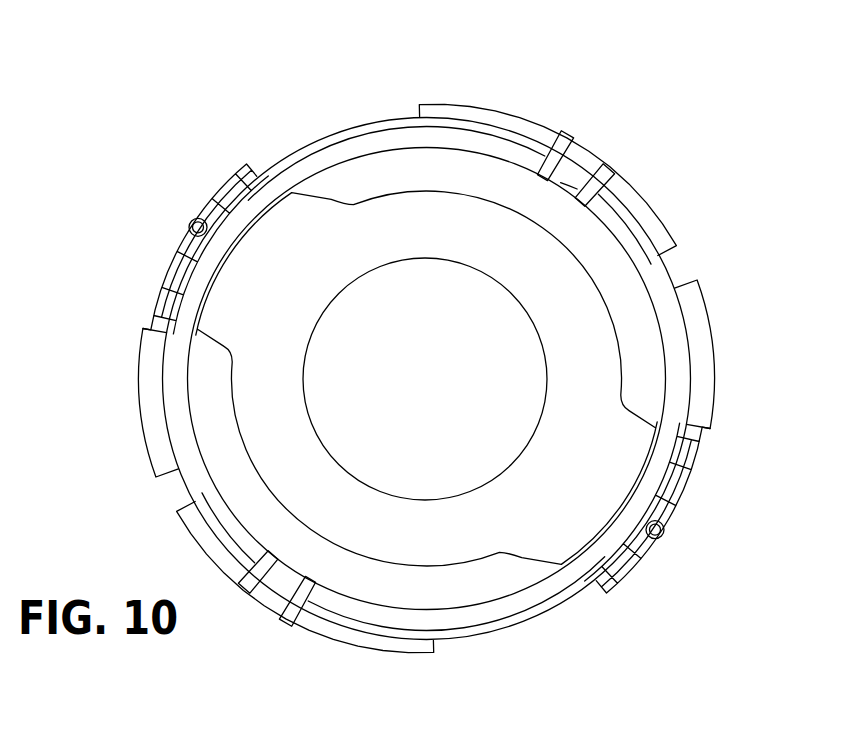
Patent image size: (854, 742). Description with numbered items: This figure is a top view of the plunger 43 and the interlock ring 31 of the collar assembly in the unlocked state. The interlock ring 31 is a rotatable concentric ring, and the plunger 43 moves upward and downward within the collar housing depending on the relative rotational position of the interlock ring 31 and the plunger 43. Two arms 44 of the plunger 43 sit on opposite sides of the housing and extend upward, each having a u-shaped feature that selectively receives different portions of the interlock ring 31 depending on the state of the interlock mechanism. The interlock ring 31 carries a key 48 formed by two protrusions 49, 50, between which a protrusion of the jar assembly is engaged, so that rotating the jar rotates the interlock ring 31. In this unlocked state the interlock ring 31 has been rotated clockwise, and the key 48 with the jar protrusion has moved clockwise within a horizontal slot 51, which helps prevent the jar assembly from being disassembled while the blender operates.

The interlock ring 31 is at (468, 110).
The plunger 43 is at (567, 298).
The arms 44 is at (703, 492).
The key 48 is at (586, 164).
The protrusion 49 is at (562, 140).
The protrusion 50 is at (603, 170).
The horizontal slot 51 is at (642, 543).